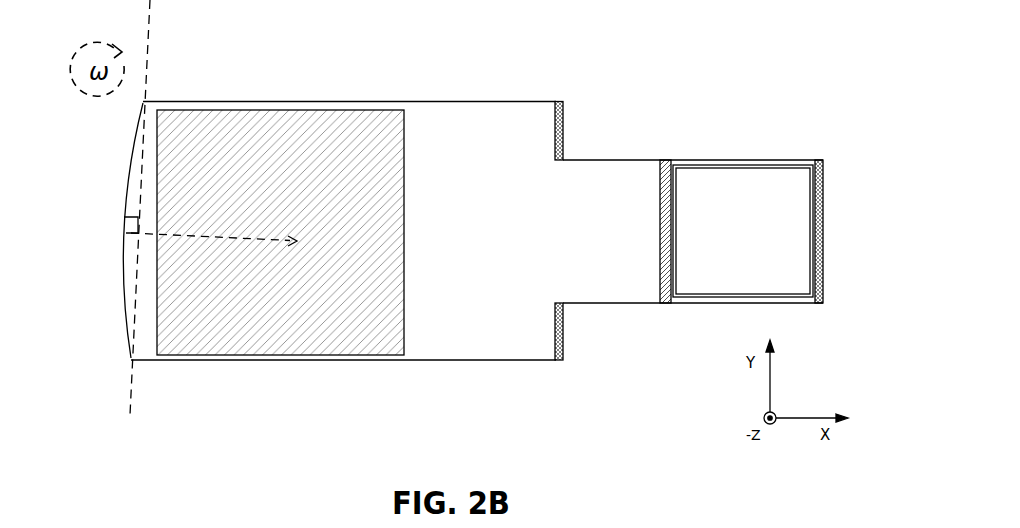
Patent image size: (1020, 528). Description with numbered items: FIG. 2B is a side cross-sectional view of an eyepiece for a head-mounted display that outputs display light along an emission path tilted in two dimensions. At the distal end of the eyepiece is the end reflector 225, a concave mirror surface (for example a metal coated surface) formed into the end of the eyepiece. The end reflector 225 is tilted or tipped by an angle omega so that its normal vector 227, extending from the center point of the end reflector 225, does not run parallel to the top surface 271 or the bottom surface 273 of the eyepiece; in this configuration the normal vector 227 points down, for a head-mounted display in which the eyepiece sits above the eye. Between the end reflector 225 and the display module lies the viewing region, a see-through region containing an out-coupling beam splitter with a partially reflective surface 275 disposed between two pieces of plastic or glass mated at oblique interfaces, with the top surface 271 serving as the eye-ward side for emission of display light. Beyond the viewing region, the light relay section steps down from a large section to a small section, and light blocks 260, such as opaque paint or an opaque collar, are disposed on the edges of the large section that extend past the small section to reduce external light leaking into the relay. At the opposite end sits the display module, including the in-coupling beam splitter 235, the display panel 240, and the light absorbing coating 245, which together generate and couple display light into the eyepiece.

The end reflector 225 is at (123, 310).
The normal vector 227 is at (265, 237).
The in-coupling beam splitter 235 is at (766, 158).
The display panel 240 is at (715, 198).
The light absorbing coating 245 is at (823, 247).
The light blocks 260 is at (563, 348).
The top surface 271 is at (337, 101).
The bottom surface 273 is at (296, 361).
The partially reflective surface 275 is at (291, 179).